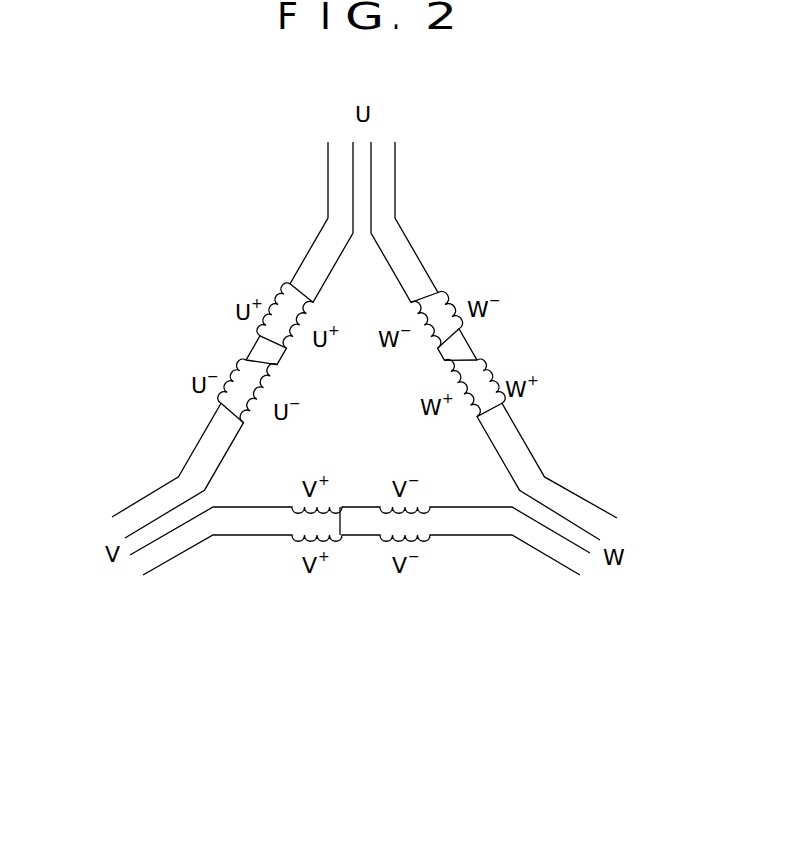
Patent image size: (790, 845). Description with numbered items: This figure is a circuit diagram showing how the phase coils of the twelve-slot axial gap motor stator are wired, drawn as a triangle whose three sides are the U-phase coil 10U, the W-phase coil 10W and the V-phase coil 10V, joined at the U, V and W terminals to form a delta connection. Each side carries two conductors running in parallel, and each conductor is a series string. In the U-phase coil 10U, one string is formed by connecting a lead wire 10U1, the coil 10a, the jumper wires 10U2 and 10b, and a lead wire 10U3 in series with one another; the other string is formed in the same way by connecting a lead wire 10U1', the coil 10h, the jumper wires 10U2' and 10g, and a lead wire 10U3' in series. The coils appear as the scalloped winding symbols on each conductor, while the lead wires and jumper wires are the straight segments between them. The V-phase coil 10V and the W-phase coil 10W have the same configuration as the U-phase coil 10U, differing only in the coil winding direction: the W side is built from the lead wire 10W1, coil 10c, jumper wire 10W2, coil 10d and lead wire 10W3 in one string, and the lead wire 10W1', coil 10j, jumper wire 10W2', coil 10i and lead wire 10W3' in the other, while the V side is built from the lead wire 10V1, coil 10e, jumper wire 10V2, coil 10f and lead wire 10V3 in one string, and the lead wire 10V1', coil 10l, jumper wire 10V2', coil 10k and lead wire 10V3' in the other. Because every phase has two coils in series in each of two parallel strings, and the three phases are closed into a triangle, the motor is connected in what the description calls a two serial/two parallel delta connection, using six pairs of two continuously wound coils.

The U-phase coil 10U is at (213, 149).
The W-phase coil 10W is at (513, 149).
The V-phase coil 10V is at (303, 735).
The lead wire 10U1 is at (256, 240).
The lead wire 10U1' is at (282, 219).
The jumper wire 10U2 is at (160, 303).
The jumper wire 10U2' is at (146, 322).
The lead wire 10U3 is at (135, 440).
The lead wire 10U3' is at (159, 418).
The lead wire 10W1 is at (478, 239).
The lead wire 10W1' is at (468, 226).
The jumper wire 10W2 is at (571, 325).
The jumper wire 10W2' is at (580, 348).
The lead wire 10W3 is at (603, 427).
The lead wire 10W3' is at (604, 457).
The lead wire 10V1 is at (178, 593).
The lead wire 10V1' is at (234, 585).
The jumper wire 10V2 is at (321, 603).
The jumper wire 10V2' is at (366, 604).
The lead wire 10V3 is at (479, 570).
The lead wire 10V3' is at (549, 580).
The coil 10a is at (278, 303).
The coil 10b is at (235, 380).
The coil 10c is at (438, 292).
The coil 10d is at (483, 370).
The coil 10e is at (288, 535).
The coil 10f is at (378, 535).
The coil 10g is at (246, 360).
The coil 10h is at (290, 284).
The coil 10i is at (502, 405).
The coil 10j is at (460, 331).
The coil 10k is at (428, 507).
The coil 10l is at (350, 535).